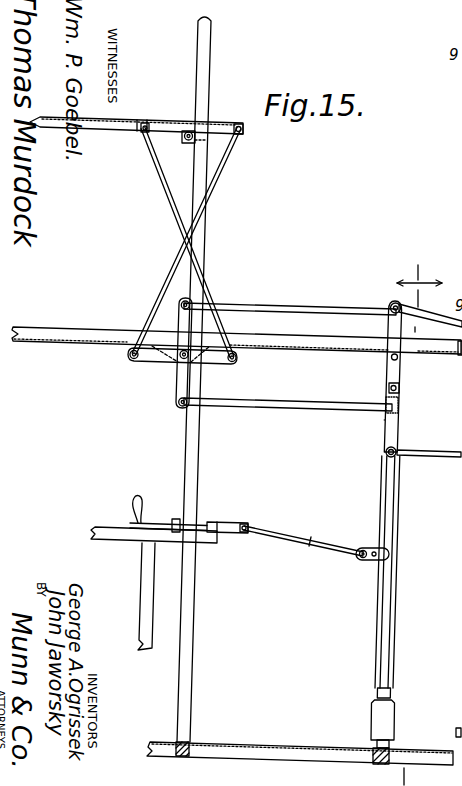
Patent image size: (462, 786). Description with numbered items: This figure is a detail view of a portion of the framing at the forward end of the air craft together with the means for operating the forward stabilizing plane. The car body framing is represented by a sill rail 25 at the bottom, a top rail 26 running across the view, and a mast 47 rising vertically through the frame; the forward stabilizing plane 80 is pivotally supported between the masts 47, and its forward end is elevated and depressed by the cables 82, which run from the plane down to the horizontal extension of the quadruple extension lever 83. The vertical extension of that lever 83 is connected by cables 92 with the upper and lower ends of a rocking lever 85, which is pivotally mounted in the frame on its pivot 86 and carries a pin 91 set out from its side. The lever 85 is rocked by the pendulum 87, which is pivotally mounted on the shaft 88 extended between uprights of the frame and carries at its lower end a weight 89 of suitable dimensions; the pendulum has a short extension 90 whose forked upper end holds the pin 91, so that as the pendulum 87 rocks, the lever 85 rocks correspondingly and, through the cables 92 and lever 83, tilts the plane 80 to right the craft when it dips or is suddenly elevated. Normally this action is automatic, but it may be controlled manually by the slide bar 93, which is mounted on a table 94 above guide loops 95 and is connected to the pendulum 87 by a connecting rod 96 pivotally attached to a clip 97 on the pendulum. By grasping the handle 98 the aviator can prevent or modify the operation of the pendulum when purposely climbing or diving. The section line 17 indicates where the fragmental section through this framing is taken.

The section line 17— 17 is at (419, 516).
The sill rails 25 is at (266, 753).
The top rails 26 is at (53, 330).
The mast 47 is at (205, 67).
The stabilizing plane 80 is at (125, 126).
The cables 82 is at (163, 181).
The quadruple extension lever 83 is at (182, 353).
The rocking lever 85 is at (394, 321).
The pivot 86 is at (390, 359).
The pendulum 87 is at (392, 517).
The shaft 88 is at (376, 455).
The weight 89 is at (386, 723).
The extension 90 is at (397, 435).
The pin 91 is at (389, 389).
The cables 92 is at (273, 403).
The slide bar 93 is at (234, 524).
The table 94 is at (205, 539).
The guide loops 95 is at (207, 522).
The connecting rod 96 is at (334, 550).
The clip 97 is at (389, 555).
The handle 98 is at (136, 495).